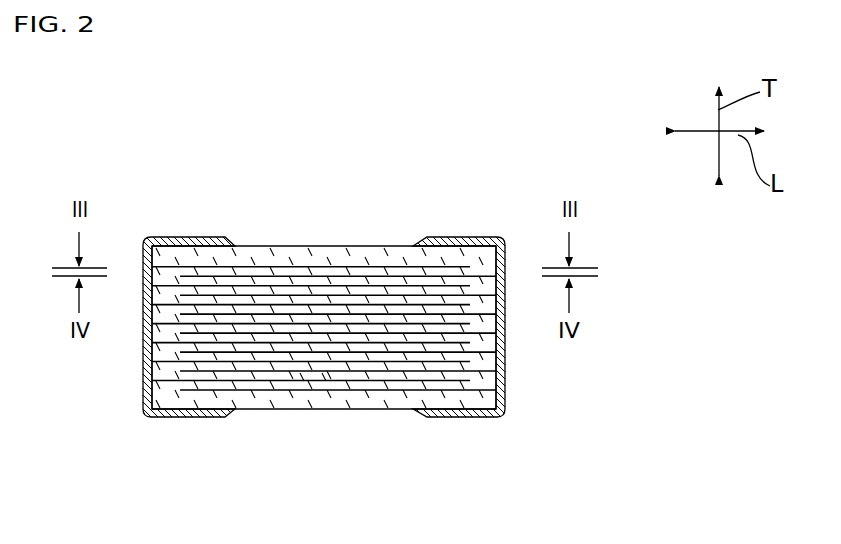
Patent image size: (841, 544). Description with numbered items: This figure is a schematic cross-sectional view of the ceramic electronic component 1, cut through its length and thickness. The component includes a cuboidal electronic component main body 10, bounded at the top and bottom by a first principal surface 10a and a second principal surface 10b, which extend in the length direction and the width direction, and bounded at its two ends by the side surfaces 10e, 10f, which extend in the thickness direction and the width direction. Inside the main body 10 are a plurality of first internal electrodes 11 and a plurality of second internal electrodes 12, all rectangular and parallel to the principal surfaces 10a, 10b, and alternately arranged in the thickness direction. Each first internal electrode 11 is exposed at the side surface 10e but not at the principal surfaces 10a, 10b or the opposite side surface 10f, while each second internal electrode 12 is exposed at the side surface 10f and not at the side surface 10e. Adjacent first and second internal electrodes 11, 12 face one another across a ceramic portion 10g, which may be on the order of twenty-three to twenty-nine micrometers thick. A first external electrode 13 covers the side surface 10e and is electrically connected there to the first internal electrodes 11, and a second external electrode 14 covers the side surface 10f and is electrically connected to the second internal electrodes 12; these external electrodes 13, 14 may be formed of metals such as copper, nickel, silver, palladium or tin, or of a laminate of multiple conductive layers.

The ceramic electronic component 1 is at (456, 201).
The electronic component main body 10 is at (378, 243).
The first principal surface 10a is at (283, 245).
The second principal surface 10b is at (278, 410).
The side surface 10e is at (152, 400).
The side surface 10f is at (505, 396).
The ceramic portion 10g is at (312, 378).
The first internal electrode 11 is at (265, 381).
The second internal electrode 12 is at (345, 392).
The first external electrode 13 is at (143, 377).
The second external electrode 14 is at (505, 380).